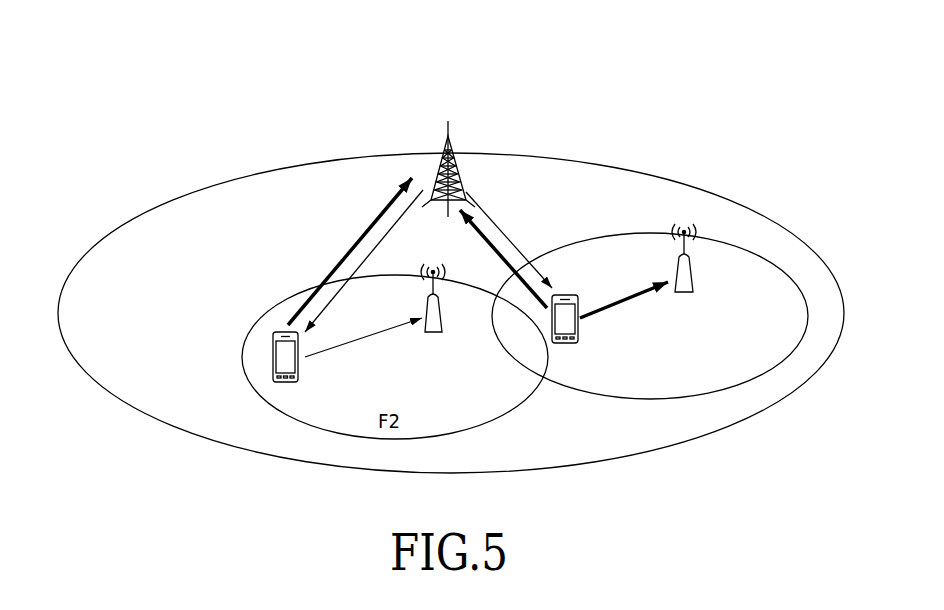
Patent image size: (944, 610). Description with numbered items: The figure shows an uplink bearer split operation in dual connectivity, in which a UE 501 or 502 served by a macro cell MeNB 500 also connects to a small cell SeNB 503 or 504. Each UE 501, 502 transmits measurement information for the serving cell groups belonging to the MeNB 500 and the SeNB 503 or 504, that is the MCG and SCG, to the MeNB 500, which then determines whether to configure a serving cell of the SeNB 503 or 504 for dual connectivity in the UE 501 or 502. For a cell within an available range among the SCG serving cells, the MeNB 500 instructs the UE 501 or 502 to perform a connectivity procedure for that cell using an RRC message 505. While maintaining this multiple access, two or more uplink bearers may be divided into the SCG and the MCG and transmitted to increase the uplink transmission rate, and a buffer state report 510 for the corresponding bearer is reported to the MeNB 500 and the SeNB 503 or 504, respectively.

The MeNB 500 is at (448, 91).
The UE 501 is at (301, 369).
The UE 502 is at (581, 331).
The SeNB 503 is at (459, 375).
The SeNB 504 is at (723, 331).
The RRC message 505 is at (614, 75).
The buffer state report 510 is at (265, 102).